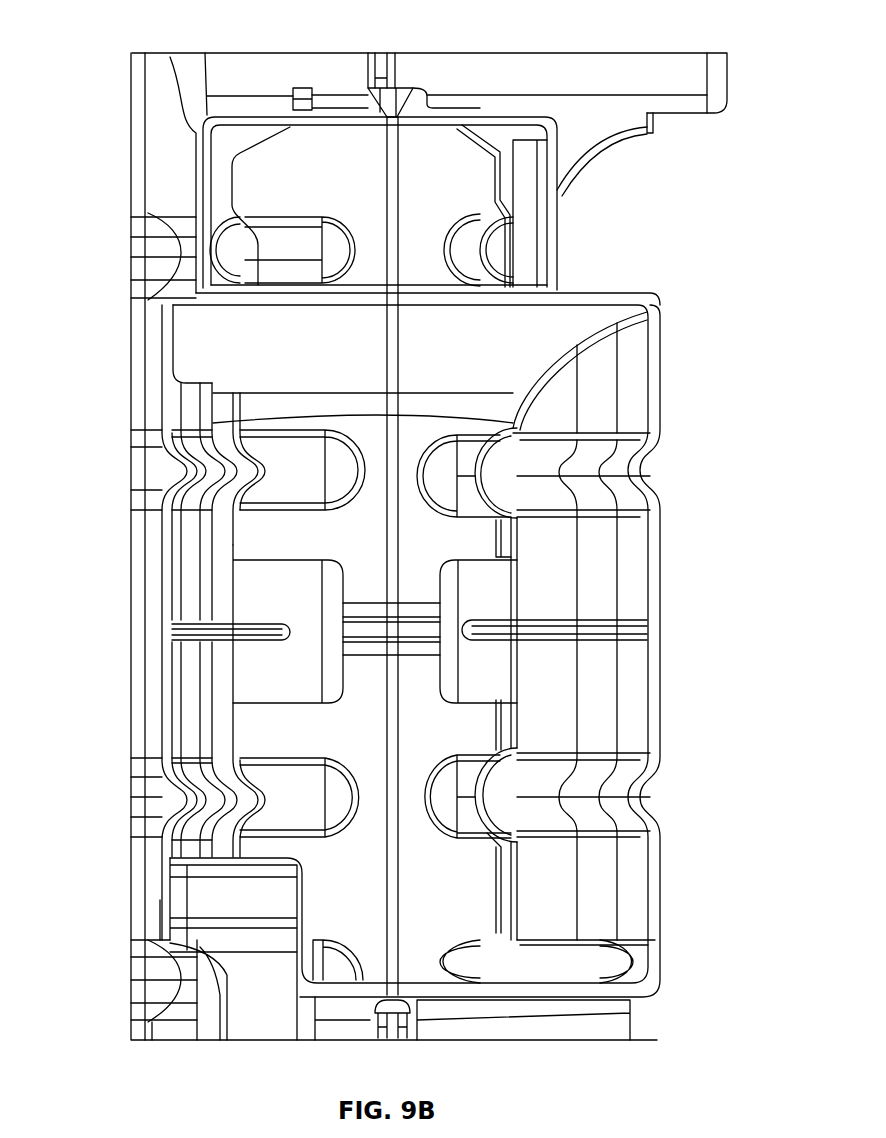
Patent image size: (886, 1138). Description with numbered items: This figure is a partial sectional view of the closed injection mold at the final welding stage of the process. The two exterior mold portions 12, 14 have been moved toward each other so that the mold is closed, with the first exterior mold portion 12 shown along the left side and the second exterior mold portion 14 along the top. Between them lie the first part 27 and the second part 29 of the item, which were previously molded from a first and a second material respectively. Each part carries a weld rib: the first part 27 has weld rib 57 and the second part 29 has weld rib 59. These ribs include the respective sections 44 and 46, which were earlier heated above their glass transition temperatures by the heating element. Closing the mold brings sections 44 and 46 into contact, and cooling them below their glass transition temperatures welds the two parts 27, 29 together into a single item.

The exterior mold portion 12 is at (133, 981).
The exterior mold portion 14 is at (728, 98).
The first part 27 is at (202, 205).
The second part 29 is at (560, 230).
The section 44 is at (390, 288).
The section 46 is at (400, 288).
The weld rib 57 is at (390, 880).
The weld rib 59 is at (397, 683).